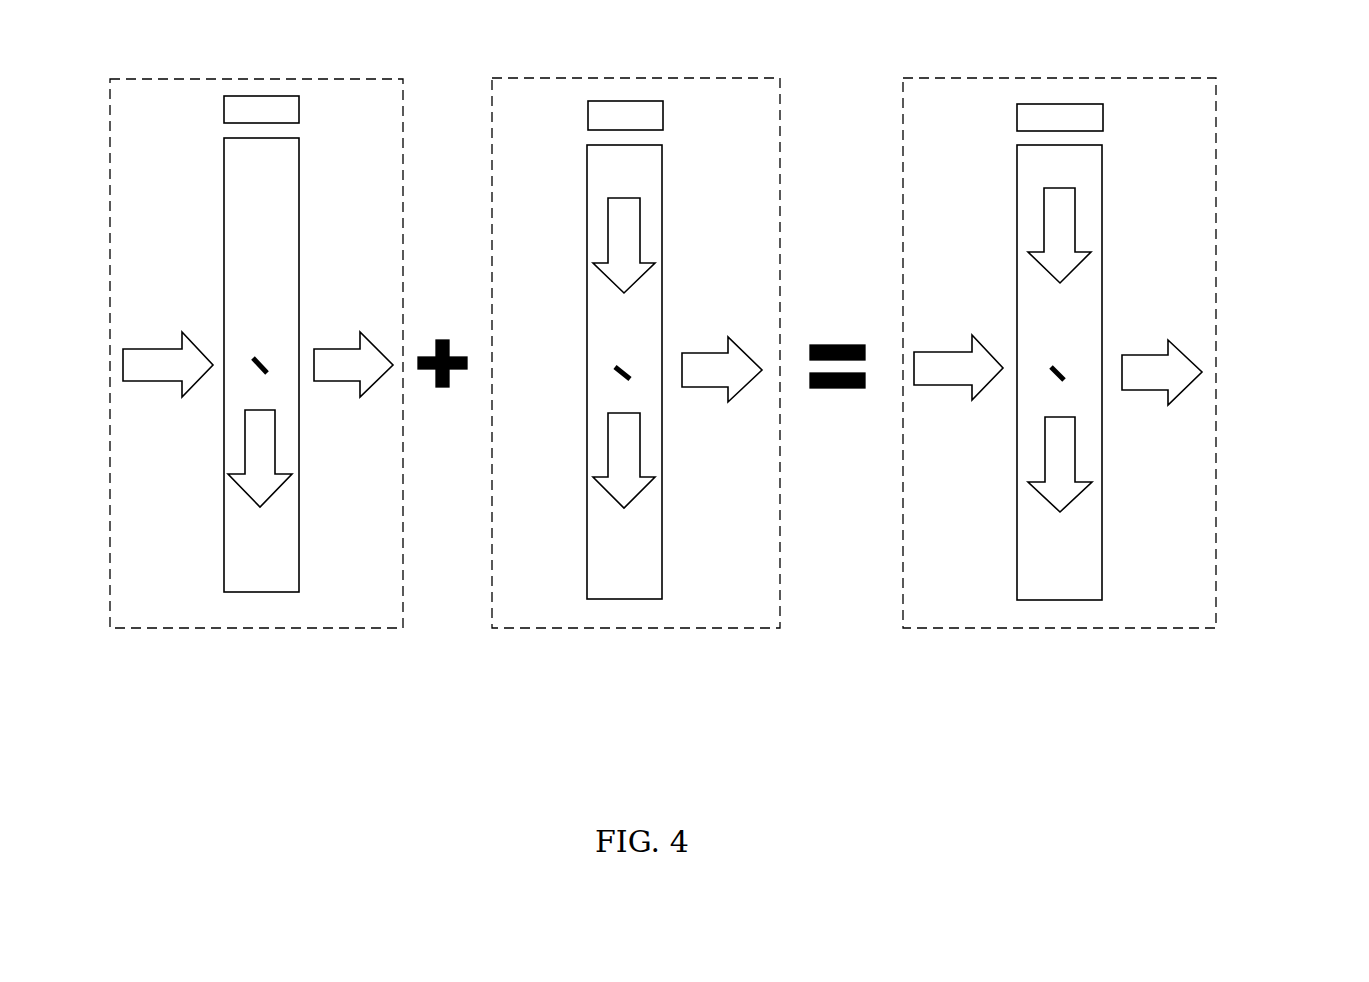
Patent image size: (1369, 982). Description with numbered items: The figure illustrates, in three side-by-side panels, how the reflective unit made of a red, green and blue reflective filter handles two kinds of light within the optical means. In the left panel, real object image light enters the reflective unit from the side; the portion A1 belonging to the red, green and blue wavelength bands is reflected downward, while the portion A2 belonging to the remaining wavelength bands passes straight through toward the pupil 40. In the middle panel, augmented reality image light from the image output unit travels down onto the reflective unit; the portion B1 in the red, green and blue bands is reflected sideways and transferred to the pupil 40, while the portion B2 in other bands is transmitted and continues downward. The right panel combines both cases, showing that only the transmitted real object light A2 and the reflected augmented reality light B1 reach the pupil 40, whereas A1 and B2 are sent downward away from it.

The pupil 40 is at (1276, 374).
The image light belonging to red, green and blue wavelength bands A1 is at (245, 438).
The real object image light belonging to wavelength bands other than red, green and A2 is at (327, 381).
The image light belonging to red, green and blue wavelength bands B1 is at (695, 388).
The image light belonging to wavelength bands other than red, green and blue B2 is at (641, 462).